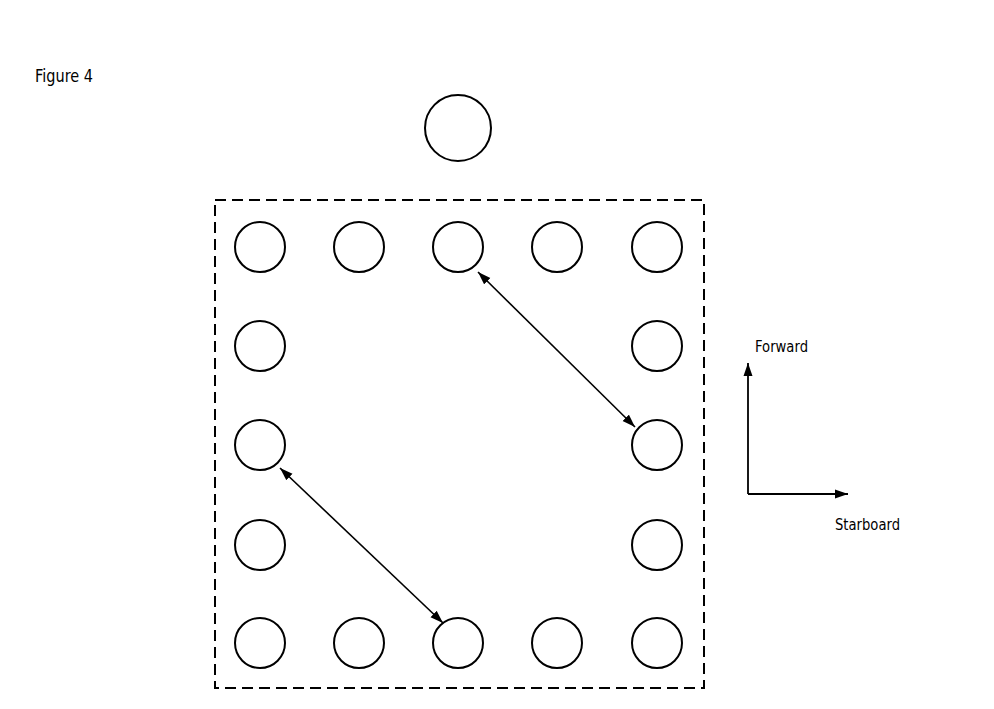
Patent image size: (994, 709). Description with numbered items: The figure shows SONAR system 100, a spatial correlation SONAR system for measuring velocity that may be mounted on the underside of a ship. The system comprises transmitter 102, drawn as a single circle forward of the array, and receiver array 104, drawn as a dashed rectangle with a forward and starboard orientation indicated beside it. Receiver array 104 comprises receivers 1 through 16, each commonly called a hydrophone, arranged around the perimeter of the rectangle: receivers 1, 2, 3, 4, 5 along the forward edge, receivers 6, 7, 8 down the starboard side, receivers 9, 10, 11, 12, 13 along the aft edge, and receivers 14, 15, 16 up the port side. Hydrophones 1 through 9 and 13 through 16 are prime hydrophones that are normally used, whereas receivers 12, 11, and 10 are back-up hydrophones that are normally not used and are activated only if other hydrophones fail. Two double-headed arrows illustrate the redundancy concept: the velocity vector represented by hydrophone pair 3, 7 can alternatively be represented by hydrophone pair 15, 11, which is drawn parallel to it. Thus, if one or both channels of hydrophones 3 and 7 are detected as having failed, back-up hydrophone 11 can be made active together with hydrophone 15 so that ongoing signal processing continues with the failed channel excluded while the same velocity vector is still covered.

The SONAR system 100 is at (215, 122).
The transmitter 102 is at (487, 121).
The receiver array 104 is at (493, 429).
The receiver 1 is at (260, 247).
The receiver 2 is at (359, 247).
The receiver 3 is at (458, 247).
The receiver 4 is at (557, 247).
The receiver 5 is at (657, 247).
The receiver 6 is at (657, 346).
The receiver 7 is at (657, 445).
The receiver 8 is at (657, 545).
The receiver 9 is at (657, 643).
The receiver 10 is at (557, 643).
The receiver 11 is at (458, 643).
The receiver 12 is at (359, 643).
The receiver 13 is at (260, 643).
The receiver 14 is at (260, 545).
The receiver 15 is at (260, 445).
The receiver 16 is at (260, 346).